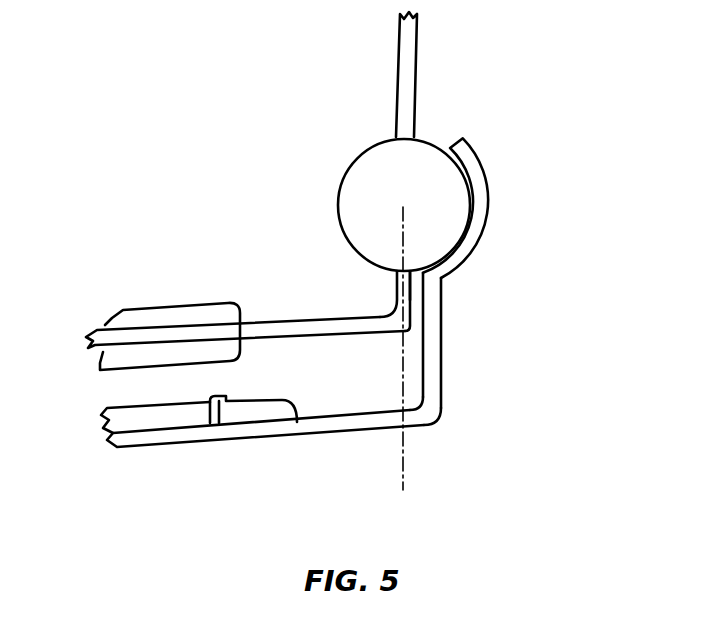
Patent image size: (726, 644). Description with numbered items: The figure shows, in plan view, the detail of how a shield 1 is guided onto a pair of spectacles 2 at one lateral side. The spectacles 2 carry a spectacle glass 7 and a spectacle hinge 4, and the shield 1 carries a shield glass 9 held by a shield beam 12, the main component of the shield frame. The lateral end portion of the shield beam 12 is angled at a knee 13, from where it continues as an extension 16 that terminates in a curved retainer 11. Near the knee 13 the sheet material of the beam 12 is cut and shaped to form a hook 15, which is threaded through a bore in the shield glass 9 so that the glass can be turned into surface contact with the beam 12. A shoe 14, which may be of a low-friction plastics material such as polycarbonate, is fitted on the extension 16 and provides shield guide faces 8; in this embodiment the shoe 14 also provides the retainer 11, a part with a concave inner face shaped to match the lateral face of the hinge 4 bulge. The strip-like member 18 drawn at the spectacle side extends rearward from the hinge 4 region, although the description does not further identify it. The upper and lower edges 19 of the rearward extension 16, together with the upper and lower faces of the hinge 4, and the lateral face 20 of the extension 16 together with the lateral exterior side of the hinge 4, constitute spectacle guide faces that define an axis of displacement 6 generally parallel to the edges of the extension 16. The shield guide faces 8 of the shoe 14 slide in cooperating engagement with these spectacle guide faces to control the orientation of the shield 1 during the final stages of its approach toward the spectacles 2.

The shield 1 is at (294, 407).
The spectacles 2 is at (226, 291).
The spectacle hinge 4 is at (378, 137).
The axis of displacement 6 is at (407, 471).
The spectacle glass 7 is at (133, 306).
The shield guide faces 8 is at (326, 194).
The shield glass 9 is at (123, 405).
The retainer 11 is at (488, 197).
The shield beam 12 is at (143, 447).
The knee 13 is at (437, 412).
The shoe 14 is at (349, 141).
The hook 15 is at (229, 397).
The extension 16 is at (441, 347).
The strip 18 is at (310, 318).
The upper and lower edges of the rearward extension 19 is at (398, 290).
The lateral face of the rearward extension 20 is at (417, 285).